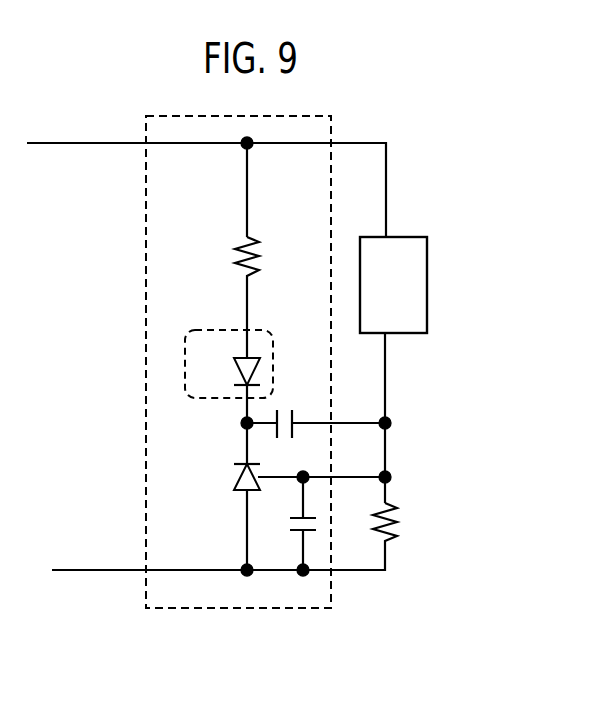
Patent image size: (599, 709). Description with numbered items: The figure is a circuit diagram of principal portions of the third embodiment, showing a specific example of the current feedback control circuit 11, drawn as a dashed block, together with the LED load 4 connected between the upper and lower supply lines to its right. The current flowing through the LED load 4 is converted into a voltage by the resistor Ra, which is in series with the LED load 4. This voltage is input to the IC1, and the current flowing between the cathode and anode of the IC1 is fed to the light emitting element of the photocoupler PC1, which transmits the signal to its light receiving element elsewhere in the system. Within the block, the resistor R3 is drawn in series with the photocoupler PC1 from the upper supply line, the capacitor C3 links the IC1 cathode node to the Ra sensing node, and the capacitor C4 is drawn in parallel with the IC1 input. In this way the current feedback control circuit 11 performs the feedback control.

The current feedback control circuit 11 is at (145, 394).
The LED load 4 is at (427, 274).
The resistor R3 is at (269, 257).
The photocoupler PC1 is at (225, 347).
The capacitor C3 is at (316, 409).
The element IC1 is at (283, 482).
The capacitor C4 is at (283, 526).
The resistor Ra is at (406, 525).